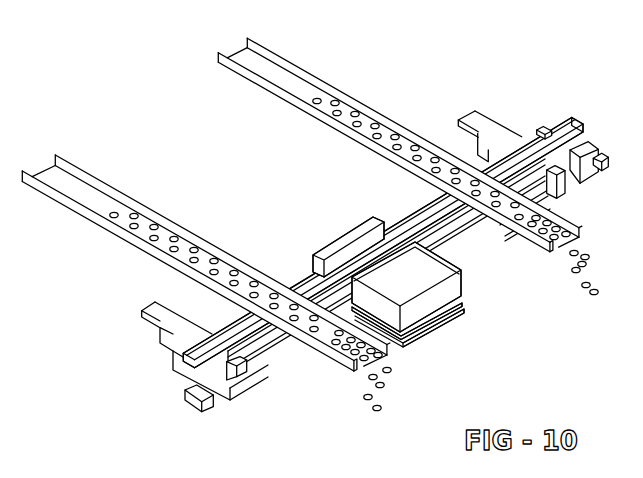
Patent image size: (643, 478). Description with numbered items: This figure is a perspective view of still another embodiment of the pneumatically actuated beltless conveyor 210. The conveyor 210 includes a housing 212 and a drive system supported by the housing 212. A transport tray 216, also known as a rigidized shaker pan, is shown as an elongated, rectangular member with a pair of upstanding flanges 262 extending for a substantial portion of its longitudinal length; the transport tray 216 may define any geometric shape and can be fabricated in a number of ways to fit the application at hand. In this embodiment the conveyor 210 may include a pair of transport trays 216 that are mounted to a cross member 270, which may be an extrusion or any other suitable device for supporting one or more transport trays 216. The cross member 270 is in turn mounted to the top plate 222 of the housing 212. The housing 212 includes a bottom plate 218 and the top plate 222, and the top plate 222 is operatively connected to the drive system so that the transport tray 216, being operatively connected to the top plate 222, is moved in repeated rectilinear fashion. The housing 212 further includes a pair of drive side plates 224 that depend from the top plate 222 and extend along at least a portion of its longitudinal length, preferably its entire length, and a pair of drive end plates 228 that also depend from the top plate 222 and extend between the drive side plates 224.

The conveyor 210 is at (431, 80).
The housing 212 is at (307, 241).
The transport tray 216 is at (88, 187).
The bottom plate 218 is at (453, 313).
The top plate 222 is at (357, 237).
The drive side plates 224 is at (416, 344).
The drive end plates 228 is at (456, 273).
The upstanding flanges 262 is at (283, 61).
The cross member 270 is at (564, 133).